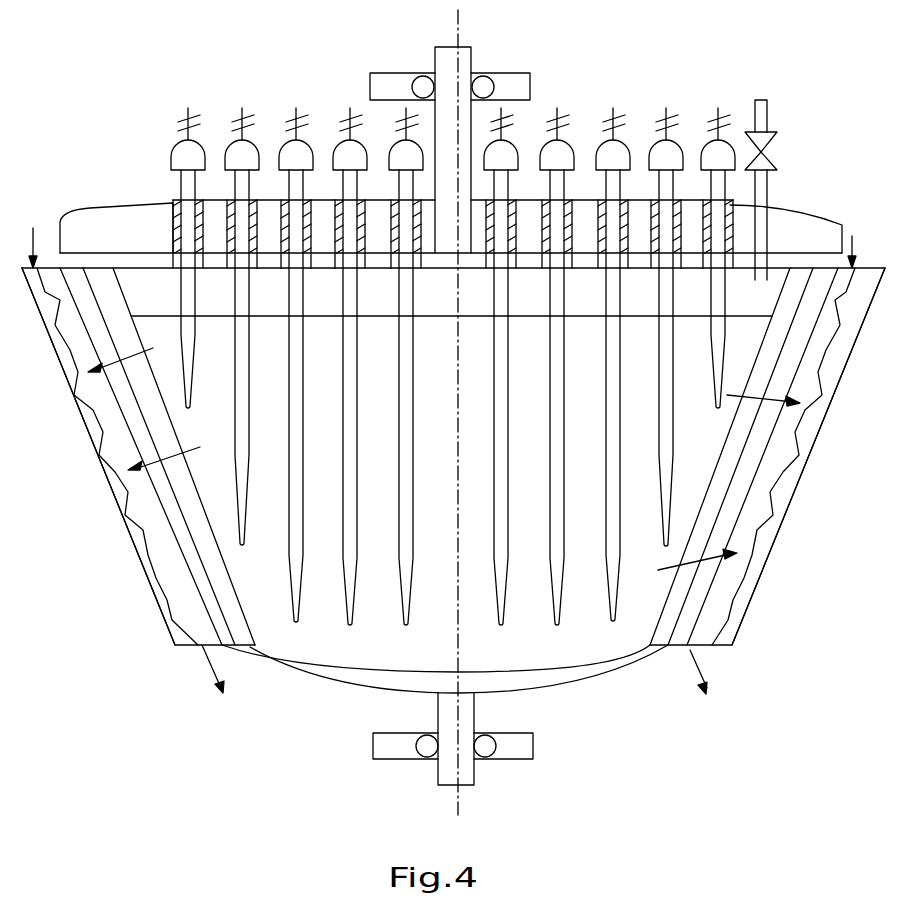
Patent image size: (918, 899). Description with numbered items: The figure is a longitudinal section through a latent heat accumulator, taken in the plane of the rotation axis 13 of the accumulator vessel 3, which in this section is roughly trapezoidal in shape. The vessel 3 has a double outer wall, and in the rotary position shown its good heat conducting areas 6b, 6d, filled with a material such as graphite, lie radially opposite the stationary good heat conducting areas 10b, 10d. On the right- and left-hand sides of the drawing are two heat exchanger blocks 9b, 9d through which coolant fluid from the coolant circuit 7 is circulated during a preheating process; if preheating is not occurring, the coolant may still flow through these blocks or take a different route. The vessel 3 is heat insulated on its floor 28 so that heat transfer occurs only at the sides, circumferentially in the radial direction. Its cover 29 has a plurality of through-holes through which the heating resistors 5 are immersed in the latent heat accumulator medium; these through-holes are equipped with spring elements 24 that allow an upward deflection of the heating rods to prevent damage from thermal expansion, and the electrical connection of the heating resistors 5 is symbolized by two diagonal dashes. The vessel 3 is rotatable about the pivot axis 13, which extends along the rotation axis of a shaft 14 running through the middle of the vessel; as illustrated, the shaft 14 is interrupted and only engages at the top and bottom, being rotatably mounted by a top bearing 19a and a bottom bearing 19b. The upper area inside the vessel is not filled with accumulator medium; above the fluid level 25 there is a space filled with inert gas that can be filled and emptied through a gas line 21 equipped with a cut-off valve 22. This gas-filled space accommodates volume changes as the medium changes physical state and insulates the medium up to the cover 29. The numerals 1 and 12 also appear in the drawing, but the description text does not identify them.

The vessel 1 is at (600, 688).
The accumulator vessel 3 is at (693, 485).
The heating resistors 5 is at (234, 412).
The good heat conducting area 6b is at (661, 637).
The good heat conducting area 6d is at (243, 632).
The coolant circuit 7 is at (36, 236).
The heat exchanger block 9b is at (740, 624).
The heat exchanger block 9d is at (155, 595).
The stationary good heat conducting area 10b is at (757, 427).
The stationary good heat conducting area 10d is at (73, 277).
The intermediate wall 12 is at (760, 300).
The rotation axis 13 is at (458, 32).
The shaft 14 is at (435, 48).
The top bearing 19a is at (478, 78).
The bottom bearing 19b is at (487, 756).
The gas line 21 is at (768, 112).
The cut-off valve 22 is at (775, 155).
The spring elements 24 is at (175, 225).
The fluid level 25 is at (163, 315).
The floor 28 is at (338, 695).
The cover 29 is at (815, 220).